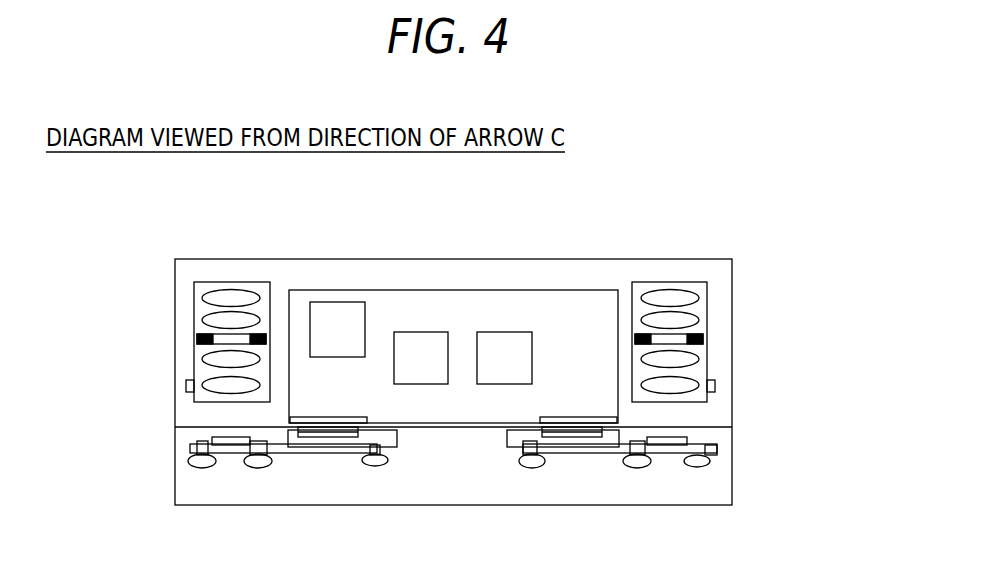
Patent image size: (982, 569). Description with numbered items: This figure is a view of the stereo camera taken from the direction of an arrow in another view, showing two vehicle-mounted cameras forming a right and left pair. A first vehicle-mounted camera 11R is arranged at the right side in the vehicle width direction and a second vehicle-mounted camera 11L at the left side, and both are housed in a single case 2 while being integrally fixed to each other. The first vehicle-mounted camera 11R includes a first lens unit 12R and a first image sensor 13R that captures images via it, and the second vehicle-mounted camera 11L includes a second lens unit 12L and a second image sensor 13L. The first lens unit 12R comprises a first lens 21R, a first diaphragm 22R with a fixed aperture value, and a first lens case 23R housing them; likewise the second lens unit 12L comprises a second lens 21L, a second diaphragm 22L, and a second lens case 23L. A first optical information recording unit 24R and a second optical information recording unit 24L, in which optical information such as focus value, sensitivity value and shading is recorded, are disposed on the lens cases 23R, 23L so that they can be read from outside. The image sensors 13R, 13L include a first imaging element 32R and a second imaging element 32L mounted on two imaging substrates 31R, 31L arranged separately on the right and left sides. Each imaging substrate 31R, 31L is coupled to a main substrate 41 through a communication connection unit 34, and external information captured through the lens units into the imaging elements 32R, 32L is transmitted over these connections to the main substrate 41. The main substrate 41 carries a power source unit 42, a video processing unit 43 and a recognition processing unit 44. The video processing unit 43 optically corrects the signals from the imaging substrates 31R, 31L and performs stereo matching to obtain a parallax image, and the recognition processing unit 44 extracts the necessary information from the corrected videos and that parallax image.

The case 2 is at (173, 472).
The second vehicle-mounted camera 11L is at (188, 252).
The first vehicle-mounted camera 11R is at (719, 252).
The second lens unit 12L is at (186, 284).
The first lens unit 12R is at (715, 284).
The second image sensor 13L is at (184, 450).
The first image sensor 13R is at (726, 449).
The second lens 21L is at (205, 322).
The first lens 21R is at (700, 322).
The second diaphragm 22L is at (197, 339).
The first diaphragm 22R is at (703, 340).
The second lens case 23L is at (197, 358).
The first lens case 23R is at (703, 360).
The second optical information recording unit 24L is at (186, 386).
The first optical information recording unit 24R is at (715, 387).
The imaging substrate 31L is at (281, 454).
The imaging substrate 31R is at (606, 454).
The second imaging element 32L is at (222, 438).
The first imaging element 32R is at (689, 437).
The communication connection unit 34 is at (338, 447).
The main substrate 41 is at (577, 302).
The power source unit 42 is at (338, 308).
The video processing unit 43 is at (418, 338).
The recognition processing unit 44 is at (497, 342).